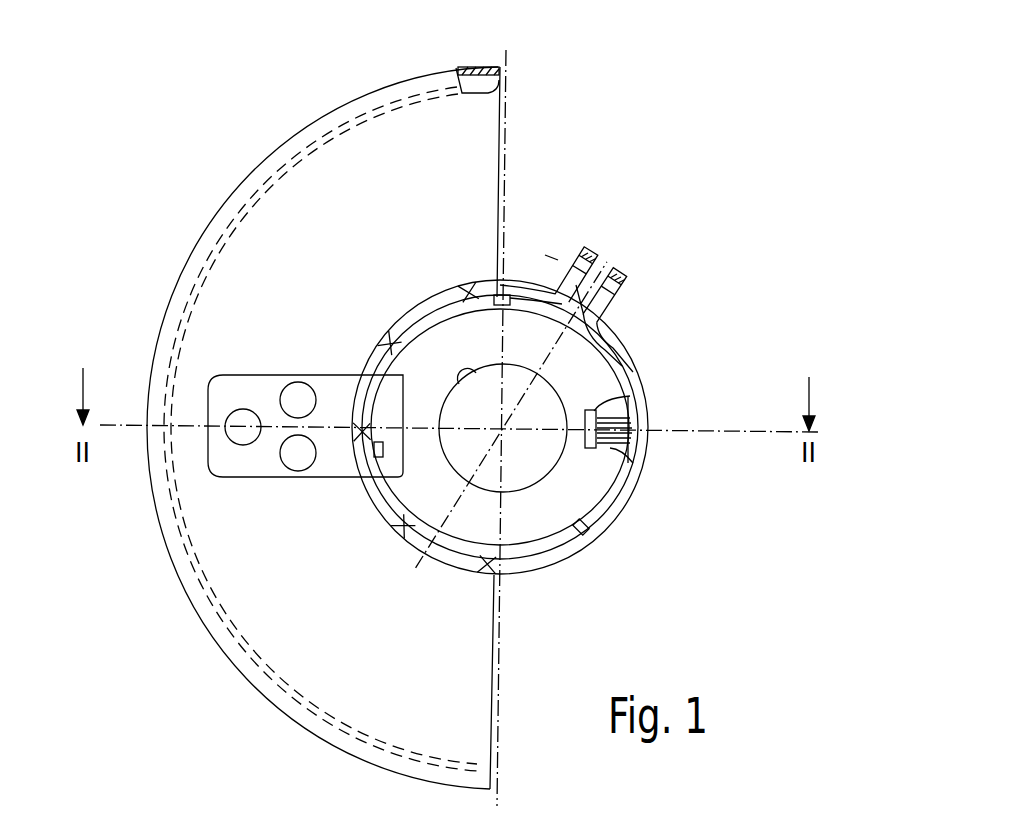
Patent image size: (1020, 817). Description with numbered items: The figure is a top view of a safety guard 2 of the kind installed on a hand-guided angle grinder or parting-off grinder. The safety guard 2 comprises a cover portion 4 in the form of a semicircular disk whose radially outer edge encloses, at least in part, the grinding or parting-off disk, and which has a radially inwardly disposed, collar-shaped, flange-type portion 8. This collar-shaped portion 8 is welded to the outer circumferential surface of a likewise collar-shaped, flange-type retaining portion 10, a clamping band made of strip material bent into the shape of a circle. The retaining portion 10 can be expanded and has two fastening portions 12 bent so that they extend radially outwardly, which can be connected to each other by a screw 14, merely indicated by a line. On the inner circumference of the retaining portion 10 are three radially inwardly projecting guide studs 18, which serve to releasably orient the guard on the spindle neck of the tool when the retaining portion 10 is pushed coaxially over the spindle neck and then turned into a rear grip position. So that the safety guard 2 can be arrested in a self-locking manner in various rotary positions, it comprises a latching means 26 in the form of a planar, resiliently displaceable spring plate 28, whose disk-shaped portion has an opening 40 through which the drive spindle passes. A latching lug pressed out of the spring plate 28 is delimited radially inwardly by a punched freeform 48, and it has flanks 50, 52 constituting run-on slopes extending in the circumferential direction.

The safety guard 2 is at (280, 130).
The cover portion 4 is at (477, 133).
The collar-shaped, flange-type portion 8 is at (421, 297).
The collar-shaped retaining portion 10 is at (542, 559).
The fastening portions 12 is at (580, 247).
The screw 14 is at (627, 303).
The guide studs 18 is at (511, 293).
The latching means 26 is at (630, 523).
The spring plate 28 is at (585, 485).
The opening 40 is at (461, 382).
The punched freeform 48 is at (640, 402).
The flank 50 is at (632, 405).
The flank 52 is at (633, 461).